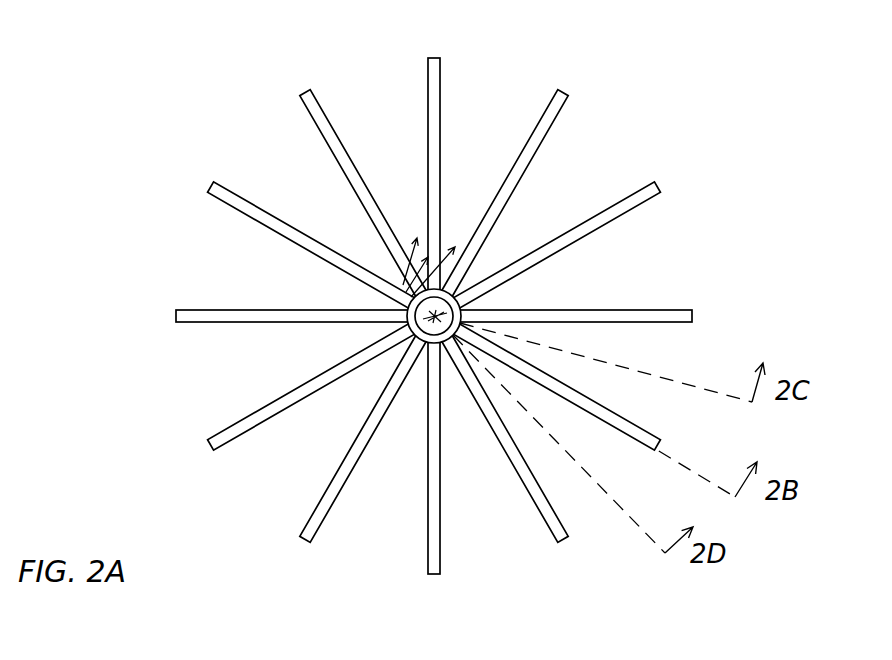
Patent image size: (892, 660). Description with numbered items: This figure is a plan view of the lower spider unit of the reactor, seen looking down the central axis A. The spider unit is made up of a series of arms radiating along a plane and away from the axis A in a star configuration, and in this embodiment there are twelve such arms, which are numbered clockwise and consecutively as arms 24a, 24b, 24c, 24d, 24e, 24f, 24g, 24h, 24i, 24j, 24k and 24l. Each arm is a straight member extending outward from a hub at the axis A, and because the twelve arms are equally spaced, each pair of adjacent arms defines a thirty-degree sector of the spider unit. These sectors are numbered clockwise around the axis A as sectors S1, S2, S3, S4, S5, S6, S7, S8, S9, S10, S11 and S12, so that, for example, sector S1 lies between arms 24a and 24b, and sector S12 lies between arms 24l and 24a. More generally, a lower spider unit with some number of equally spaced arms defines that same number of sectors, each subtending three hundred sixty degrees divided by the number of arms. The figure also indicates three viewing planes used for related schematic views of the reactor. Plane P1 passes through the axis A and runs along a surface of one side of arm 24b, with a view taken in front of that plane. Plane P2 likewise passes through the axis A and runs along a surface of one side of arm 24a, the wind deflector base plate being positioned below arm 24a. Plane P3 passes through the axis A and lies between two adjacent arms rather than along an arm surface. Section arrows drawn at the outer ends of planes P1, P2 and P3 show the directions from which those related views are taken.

The spider arm 24a is at (623, 308).
The spider arm 24b is at (640, 450).
The spider arm 24c is at (550, 532).
The spider arm 24d is at (425, 552).
The spider arm 24e is at (320, 527).
The spider arm 24f is at (230, 444).
The spider arm 24g is at (245, 310).
The spider arm 24h is at (232, 190).
The spider arm 24i is at (322, 103).
The spider arm 24j is at (427, 80).
The spider arm 24k is at (545, 102).
The spider arm 24l is at (635, 185).
The sector S1 is at (649, 351).
The sector S2 is at (590, 445).
The sector S3 is at (472, 470).
The sector S4 is at (390, 470).
The sector S5 is at (320, 428).
The sector S6 is at (290, 352).
The sector S7 is at (289, 282).
The sector S8 is at (317, 210).
The sector S9 is at (386, 163).
The sector S10 is at (468, 163).
The sector S11 is at (545, 207).
The sector S12 is at (574, 285).
The plane P1 is at (678, 462).
The plane P2 is at (688, 383).
The plane P3 is at (640, 528).
The axis A is at (420, 322).